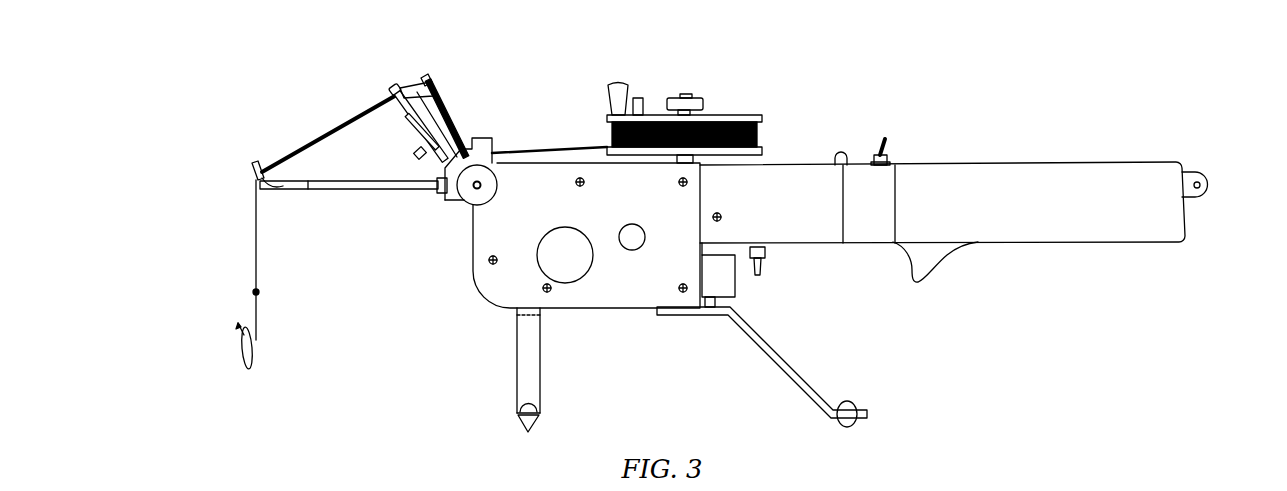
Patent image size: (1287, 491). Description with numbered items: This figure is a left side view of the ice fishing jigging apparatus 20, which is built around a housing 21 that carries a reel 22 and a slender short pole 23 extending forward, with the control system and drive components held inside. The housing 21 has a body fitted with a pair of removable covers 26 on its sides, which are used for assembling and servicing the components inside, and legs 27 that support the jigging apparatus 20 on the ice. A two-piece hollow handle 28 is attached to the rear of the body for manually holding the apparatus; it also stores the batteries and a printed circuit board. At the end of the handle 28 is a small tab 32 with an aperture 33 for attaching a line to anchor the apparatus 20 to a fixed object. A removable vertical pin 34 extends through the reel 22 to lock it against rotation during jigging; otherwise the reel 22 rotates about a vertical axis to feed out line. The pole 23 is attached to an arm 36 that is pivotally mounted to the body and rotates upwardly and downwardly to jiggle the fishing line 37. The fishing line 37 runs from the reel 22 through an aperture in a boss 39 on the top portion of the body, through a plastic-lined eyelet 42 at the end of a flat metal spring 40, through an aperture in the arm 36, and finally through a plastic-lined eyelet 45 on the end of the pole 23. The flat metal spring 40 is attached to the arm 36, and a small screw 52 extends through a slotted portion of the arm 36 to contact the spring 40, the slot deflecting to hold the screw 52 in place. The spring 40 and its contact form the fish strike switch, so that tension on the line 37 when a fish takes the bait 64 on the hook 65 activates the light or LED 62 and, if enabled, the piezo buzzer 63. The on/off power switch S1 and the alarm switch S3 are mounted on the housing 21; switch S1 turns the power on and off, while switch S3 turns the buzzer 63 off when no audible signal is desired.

The ice fishing jigging apparatus 20 is at (972, 345).
The housing 21 is at (586, 264).
The reel 22 is at (653, 97).
The slender short pole 23 is at (353, 201).
The removable covers 26 is at (548, 215).
The legs 27 is at (663, 369).
The handle 28 is at (942, 199).
The tab 32 is at (1220, 160).
The aperture 33 is at (1225, 220).
The removable vertical pin 34 is at (663, 73).
The arm 36 is at (388, 115).
The fishing line 37 is at (331, 132).
The boss 39 is at (489, 152).
The flat metal spring 40 is at (475, 99).
The eyelet 42 is at (398, 50).
The eyelet 45 is at (240, 229).
The small screw 52 is at (386, 168).
The light (LED) 62 is at (881, 116).
The piezo buzzer 63 is at (691, 303).
The bait 64 is at (279, 377).
The hook 65 is at (201, 360).
The on/off power switch S1 is at (912, 136).
The alarm switch S3 is at (789, 287).